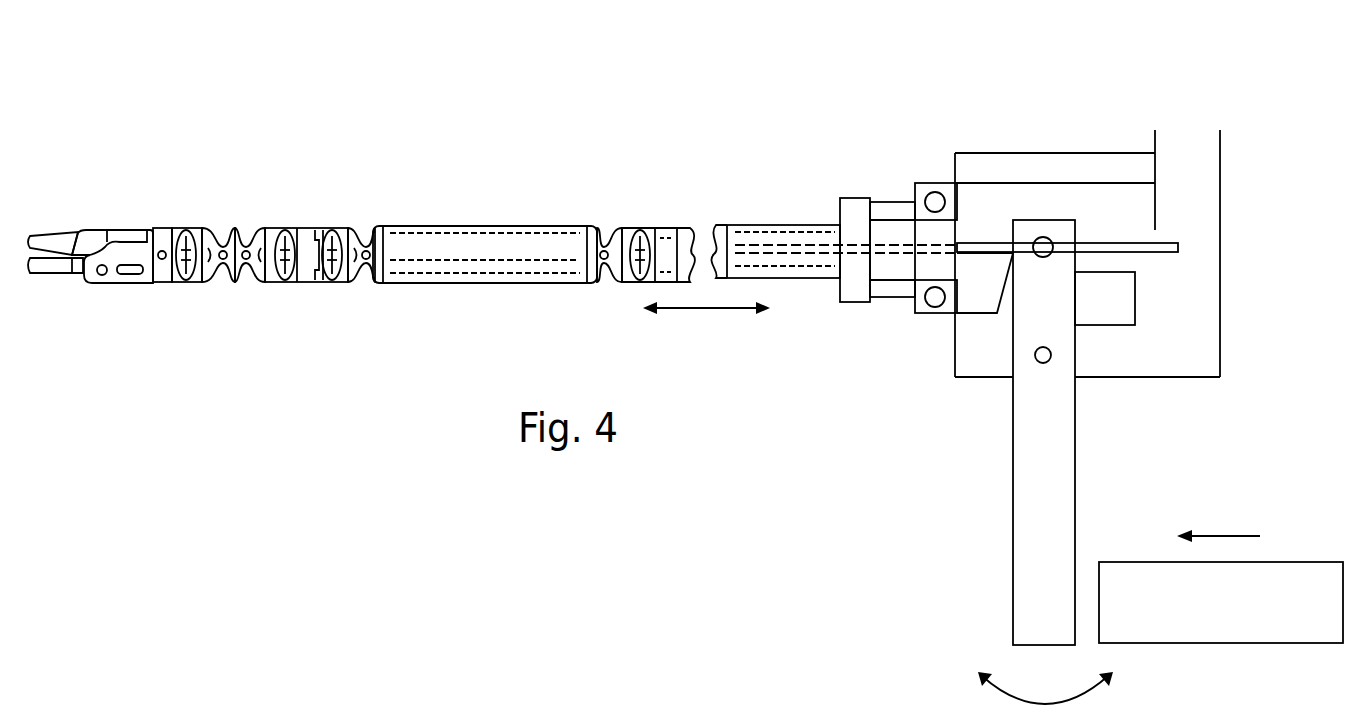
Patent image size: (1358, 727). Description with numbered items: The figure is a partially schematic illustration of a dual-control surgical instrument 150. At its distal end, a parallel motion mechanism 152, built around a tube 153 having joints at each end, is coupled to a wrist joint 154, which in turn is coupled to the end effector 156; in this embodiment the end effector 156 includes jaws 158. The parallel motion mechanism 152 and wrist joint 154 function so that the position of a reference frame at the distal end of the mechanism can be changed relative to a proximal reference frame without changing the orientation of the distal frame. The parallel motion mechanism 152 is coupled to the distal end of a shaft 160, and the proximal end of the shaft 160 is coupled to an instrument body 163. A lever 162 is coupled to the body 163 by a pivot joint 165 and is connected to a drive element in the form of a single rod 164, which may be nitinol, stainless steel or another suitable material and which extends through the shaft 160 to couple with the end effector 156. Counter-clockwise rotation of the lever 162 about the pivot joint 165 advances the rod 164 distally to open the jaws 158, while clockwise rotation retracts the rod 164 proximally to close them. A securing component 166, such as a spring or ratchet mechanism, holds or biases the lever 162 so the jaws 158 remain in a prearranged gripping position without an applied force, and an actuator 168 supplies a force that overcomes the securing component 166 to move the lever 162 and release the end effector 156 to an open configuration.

The dual-control surgical instrument 150 is at (326, 63).
The parallel motion mechanism 152 is at (470, 203).
The tube 153 is at (487, 282).
The wrist joint 154 is at (233, 227).
The end effector 156 is at (128, 285).
The jaws 158 is at (52, 235).
The shaft 160 is at (630, 226).
The lever 162 is at (1012, 433).
The instrument body 163 is at (952, 167).
The rod 164 is at (763, 243).
The pivot joint 165 is at (1052, 347).
The securing component 166 is at (1137, 297).
The actuator 168 is at (1220, 645).